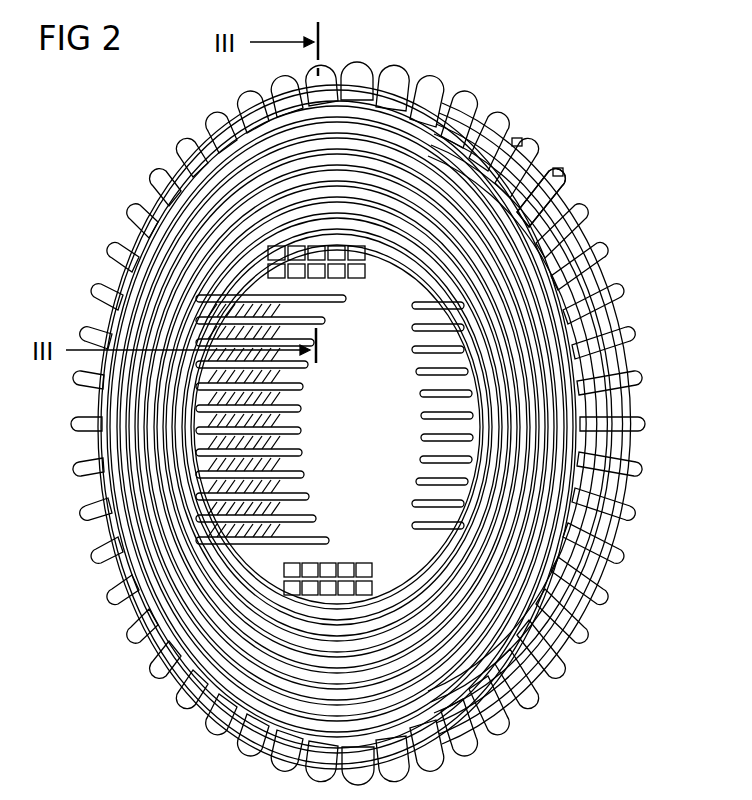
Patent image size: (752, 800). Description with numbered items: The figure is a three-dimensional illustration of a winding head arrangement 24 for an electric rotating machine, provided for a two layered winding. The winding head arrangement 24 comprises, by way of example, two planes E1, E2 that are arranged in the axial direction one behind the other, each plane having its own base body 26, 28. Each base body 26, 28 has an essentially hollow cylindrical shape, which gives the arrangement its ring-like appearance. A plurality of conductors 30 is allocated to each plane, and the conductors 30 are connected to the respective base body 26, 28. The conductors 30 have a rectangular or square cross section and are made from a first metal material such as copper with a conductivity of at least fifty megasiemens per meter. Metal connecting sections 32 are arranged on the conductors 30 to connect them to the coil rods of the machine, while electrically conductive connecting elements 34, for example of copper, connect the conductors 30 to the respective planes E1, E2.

The winding head arrangement 24 is at (628, 108).
The base body 26 is at (620, 365).
The base body 28 is at (637, 428).
The conductors 30 is at (612, 258).
The metal connecting sections 32 is at (97, 431).
The connecting elements 34 is at (578, 216).
The plane E1 is at (518, 140).
The plane E2 is at (562, 166).